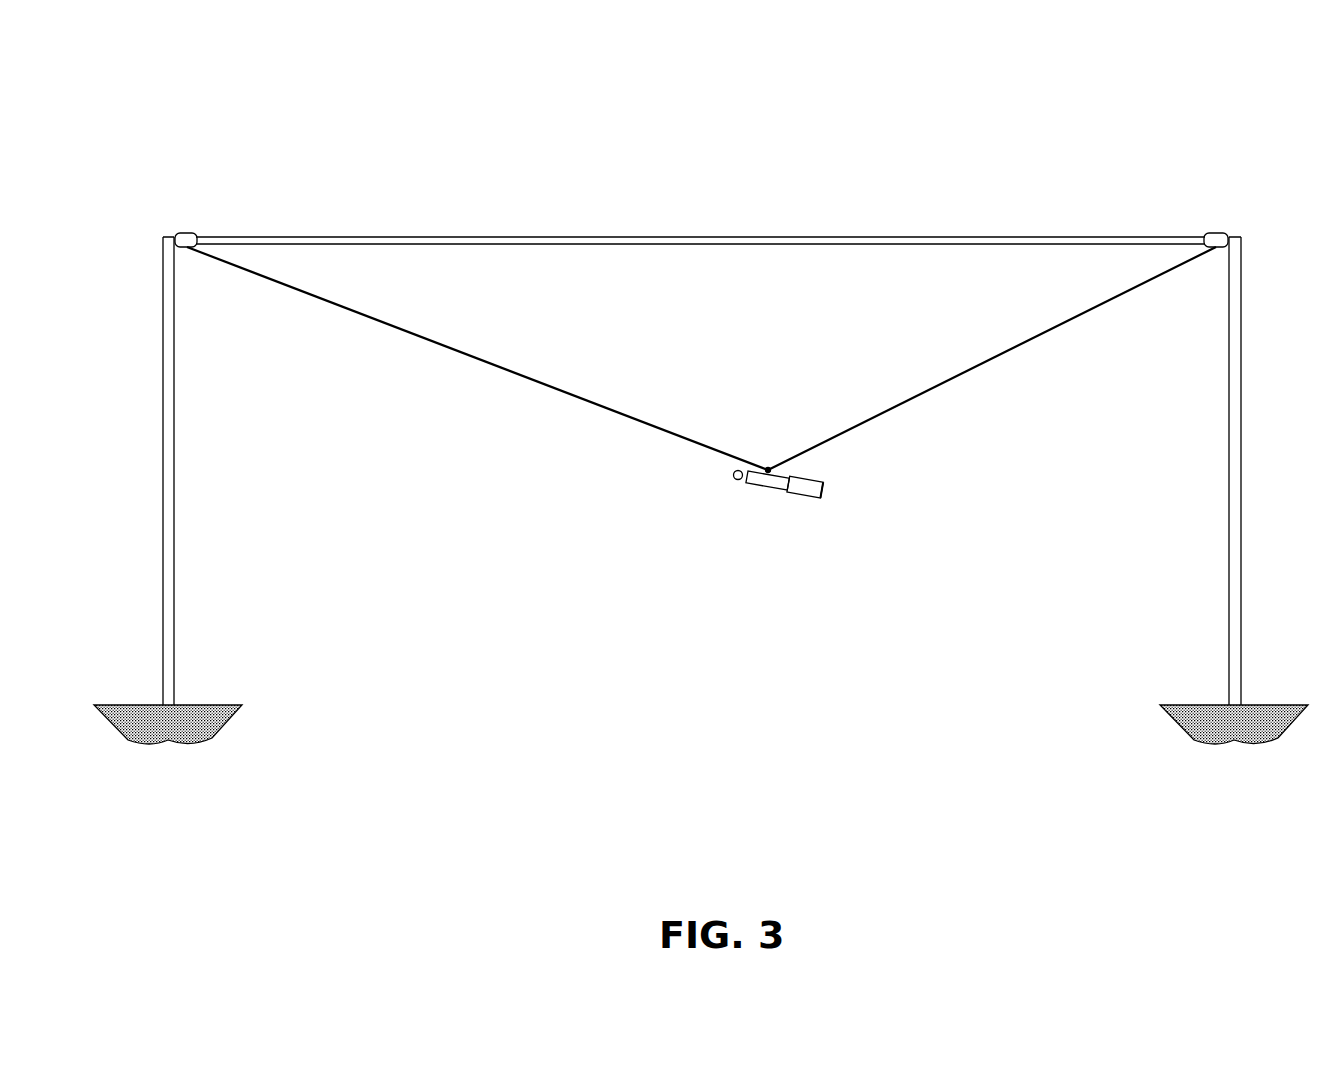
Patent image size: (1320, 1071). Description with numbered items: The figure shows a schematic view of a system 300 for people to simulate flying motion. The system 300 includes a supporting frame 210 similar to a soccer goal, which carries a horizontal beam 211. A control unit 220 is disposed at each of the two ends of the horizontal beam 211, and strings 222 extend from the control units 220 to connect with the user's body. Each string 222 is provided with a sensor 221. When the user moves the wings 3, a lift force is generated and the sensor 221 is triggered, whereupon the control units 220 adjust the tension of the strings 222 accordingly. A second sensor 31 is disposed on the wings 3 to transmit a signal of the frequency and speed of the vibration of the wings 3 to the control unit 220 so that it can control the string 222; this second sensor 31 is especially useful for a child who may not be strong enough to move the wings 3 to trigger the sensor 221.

The system for people to simulate flying motion 300 is at (987, 130).
The supporting frame 210 is at (163, 435).
The horizontal beam 211 is at (800, 237).
The control unit 220 is at (185, 237).
The sensor 221 is at (712, 440).
The string 222 is at (1010, 350).
The wings 3 is at (745, 487).
The second sensor 31 is at (742, 492).